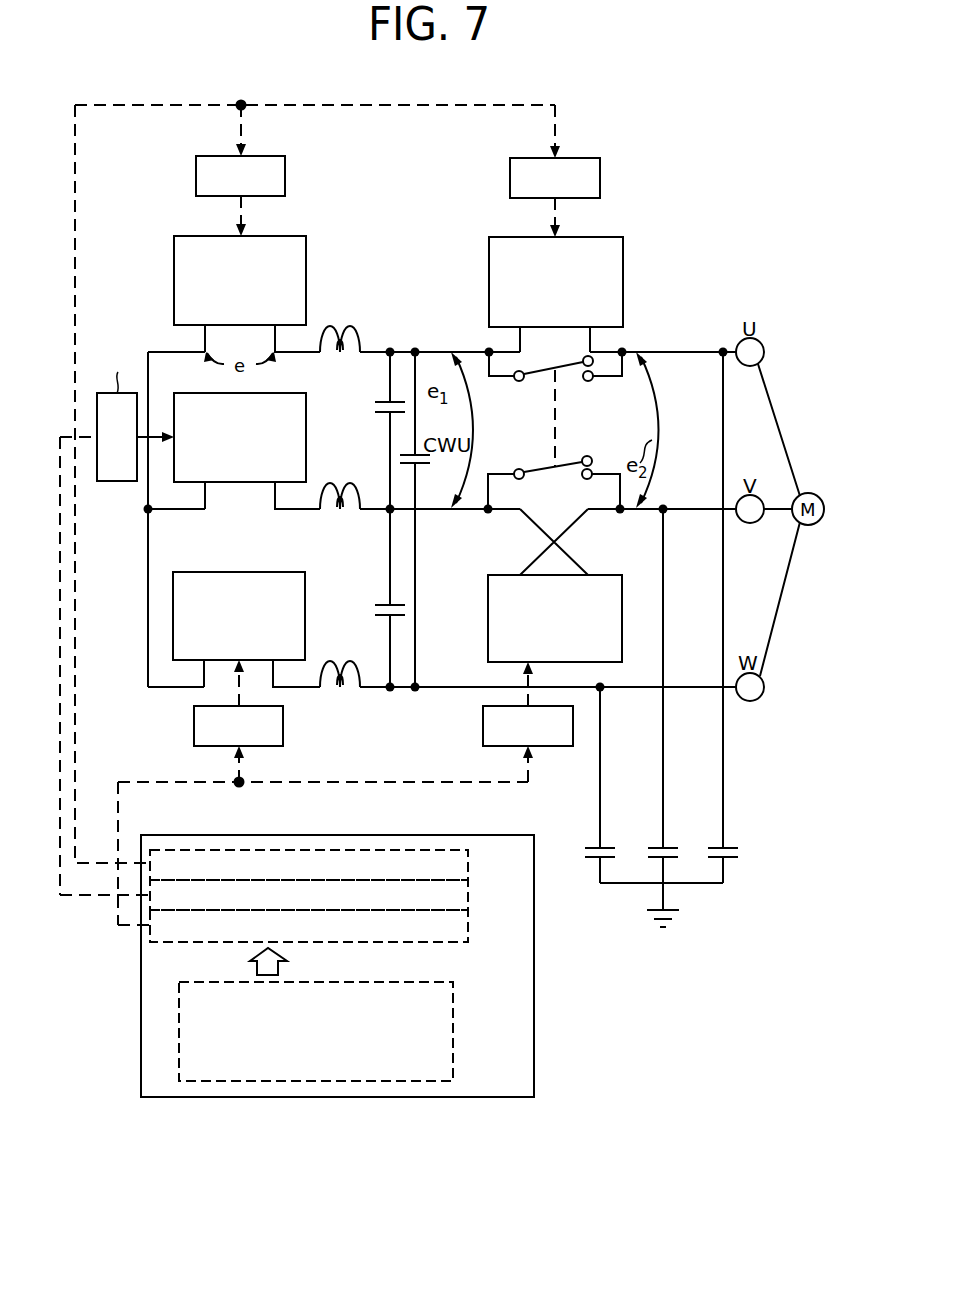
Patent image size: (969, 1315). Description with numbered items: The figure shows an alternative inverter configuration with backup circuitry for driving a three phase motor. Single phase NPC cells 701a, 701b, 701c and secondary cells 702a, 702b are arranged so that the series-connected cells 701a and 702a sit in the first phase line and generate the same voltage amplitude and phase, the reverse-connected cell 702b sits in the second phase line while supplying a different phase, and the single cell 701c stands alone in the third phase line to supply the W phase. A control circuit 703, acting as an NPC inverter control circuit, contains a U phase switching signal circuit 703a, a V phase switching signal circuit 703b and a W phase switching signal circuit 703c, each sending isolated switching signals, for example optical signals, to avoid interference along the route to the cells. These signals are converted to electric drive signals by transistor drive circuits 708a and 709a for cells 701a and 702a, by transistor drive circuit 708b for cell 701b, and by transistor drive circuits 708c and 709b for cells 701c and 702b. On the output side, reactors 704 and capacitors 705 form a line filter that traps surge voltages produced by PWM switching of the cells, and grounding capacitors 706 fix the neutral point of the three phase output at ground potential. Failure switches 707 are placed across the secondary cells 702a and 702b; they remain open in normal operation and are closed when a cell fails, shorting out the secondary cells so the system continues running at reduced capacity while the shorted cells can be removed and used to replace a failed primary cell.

The cell SPIu1 701a is at (306, 253).
The cell SPIv1 701b is at (238, 483).
The cell SPIw1 701c is at (284, 572).
The cell SPIu2 702a is at (623, 256).
The cell SPIw2 702b is at (488, 618).
The control circuit 703 is at (311, 981).
The U phase switching signal circuit 703a is at (468, 874).
The V phase switching signal circuit 703b is at (468, 905).
The W phase switching signal circuit 703c is at (468, 928).
The reactors 704 is at (350, 288).
The capacitors 705 is at (396, 350).
The grounding capacitors 706 is at (740, 852).
The failure switches 707 is at (543, 478).
The transistor drive circuit DRu1 708a is at (285, 183).
The transistor drive circuit DRv1 708b is at (109, 482).
The transistor drive circuit DRw1 708c is at (283, 733).
The transistor drive circuit DRu2 709a is at (600, 179).
The transistor drive circuit DRw2 709b is at (483, 728).